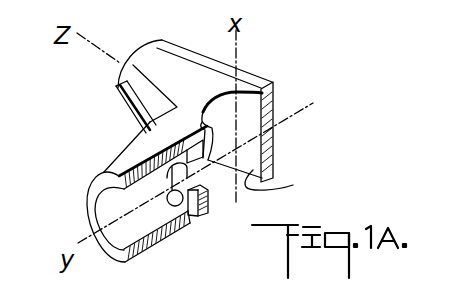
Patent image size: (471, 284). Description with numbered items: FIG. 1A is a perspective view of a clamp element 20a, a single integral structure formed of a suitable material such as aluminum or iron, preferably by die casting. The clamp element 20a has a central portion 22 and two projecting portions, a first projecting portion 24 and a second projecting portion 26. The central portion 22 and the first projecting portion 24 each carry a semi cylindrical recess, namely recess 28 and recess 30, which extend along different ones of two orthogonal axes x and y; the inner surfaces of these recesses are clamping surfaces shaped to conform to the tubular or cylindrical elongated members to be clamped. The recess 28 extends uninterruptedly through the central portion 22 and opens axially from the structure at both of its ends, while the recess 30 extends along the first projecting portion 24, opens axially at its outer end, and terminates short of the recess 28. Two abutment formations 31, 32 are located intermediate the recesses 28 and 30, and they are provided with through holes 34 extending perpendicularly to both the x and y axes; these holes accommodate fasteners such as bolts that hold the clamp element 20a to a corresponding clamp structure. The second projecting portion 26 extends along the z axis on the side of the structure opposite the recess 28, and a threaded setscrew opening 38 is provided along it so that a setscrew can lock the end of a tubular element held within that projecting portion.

The clamp element 20a is at (280, 88).
The central portion 22 is at (252, 80).
The first projecting portion 24 is at (133, 160).
The second projecting portion 26 is at (170, 48).
The semi cylindrical recess 28 is at (287, 176).
The semi cylindrical recess 30 is at (96, 207).
The abutment formation 31 is at (203, 111).
The abutment formation 32 is at (209, 202).
The through hole 34 is at (182, 206).
The threaded setscrew opening 38 is at (133, 117).